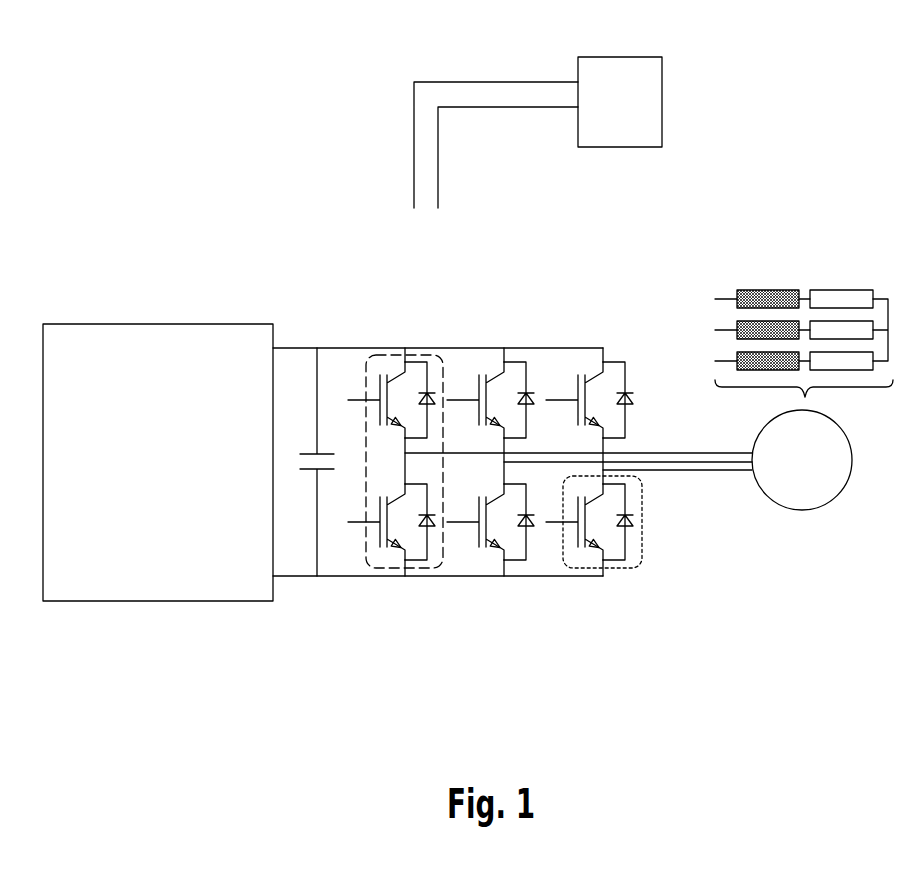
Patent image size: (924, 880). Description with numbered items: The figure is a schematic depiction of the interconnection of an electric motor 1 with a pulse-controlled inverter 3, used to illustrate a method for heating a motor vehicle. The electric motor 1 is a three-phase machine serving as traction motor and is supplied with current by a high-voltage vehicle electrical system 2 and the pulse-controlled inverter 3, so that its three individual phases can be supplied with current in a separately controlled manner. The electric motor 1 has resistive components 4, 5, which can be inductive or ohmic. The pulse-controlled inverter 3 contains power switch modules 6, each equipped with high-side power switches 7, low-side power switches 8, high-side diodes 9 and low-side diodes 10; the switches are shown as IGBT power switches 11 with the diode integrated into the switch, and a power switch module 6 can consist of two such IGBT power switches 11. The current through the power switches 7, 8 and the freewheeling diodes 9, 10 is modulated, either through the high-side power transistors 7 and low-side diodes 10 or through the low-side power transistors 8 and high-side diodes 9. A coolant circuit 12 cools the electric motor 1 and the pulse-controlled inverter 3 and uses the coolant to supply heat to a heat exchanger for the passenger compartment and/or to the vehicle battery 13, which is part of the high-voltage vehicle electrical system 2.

The electric motor 1 is at (838, 480).
The high-voltage vehicle electrical system 2 is at (145, 343).
The pulse-controlled inverter 3 is at (650, 342).
The resistive component 4 is at (765, 290).
The resistive component 5 is at (845, 290).
The power switch module 6 is at (420, 470).
The high-side power switch 7 is at (381, 372).
The low-side power switch 8 is at (380, 565).
The high-side diode 9 is at (420, 362).
The low-side diode 10 is at (428, 562).
The IGBT power switch 11 is at (643, 538).
The coolant circuit 12 is at (423, 120).
The vehicle battery 13 is at (650, 85).